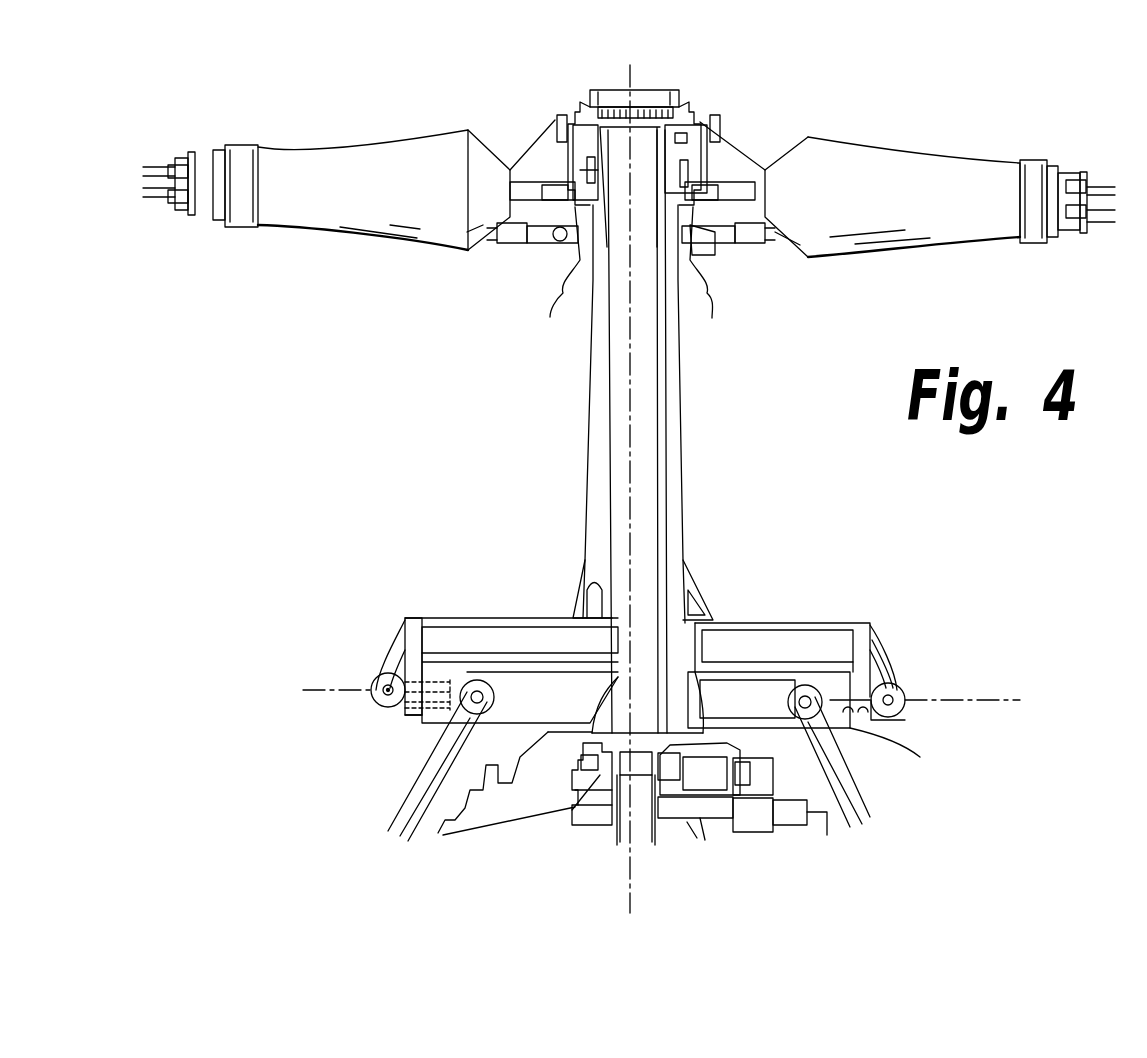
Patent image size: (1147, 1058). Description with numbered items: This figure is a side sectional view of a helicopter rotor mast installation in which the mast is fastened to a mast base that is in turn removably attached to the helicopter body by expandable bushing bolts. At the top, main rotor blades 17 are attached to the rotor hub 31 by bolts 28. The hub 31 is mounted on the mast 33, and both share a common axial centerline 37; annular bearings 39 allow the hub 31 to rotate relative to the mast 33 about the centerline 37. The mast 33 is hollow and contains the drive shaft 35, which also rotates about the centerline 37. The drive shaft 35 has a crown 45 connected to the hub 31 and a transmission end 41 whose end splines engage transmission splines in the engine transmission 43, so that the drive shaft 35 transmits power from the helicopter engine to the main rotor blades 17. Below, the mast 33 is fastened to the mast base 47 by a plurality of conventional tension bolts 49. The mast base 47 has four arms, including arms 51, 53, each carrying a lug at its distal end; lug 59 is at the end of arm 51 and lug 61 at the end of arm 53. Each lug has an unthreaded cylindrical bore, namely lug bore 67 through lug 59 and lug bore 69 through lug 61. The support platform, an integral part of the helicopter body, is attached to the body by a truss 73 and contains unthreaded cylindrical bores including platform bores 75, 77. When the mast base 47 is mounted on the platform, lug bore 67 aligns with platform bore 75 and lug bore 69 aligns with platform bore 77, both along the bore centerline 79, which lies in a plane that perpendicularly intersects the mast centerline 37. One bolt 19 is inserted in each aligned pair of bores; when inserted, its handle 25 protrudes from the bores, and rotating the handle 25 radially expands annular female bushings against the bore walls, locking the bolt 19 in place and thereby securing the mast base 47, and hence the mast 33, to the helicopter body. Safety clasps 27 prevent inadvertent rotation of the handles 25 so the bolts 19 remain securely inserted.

The main rotor blades 17 is at (153, 165).
The bolt 19 is at (374, 676).
The handle 25 is at (388, 660).
The safety clasps 27 is at (398, 630).
The bolts 28 is at (192, 150).
The rotor hub 31 is at (531, 267).
The mast 33 is at (678, 402).
The drive shaft 35 is at (663, 350).
The axial centerline 37 is at (632, 70).
The annular bearings 39 is at (715, 148).
The transmission end 41 is at (632, 773).
The engine transmission 43 is at (757, 836).
The crown 45 is at (612, 128).
The mast base 47 is at (790, 600).
The tension bolts 49 is at (580, 600).
The arm 51 is at (822, 622).
The arm 53 is at (457, 618).
The lug 59 is at (880, 630).
The lug 61 is at (402, 708).
The lug bore 67 is at (890, 718).
The lug bore 69 is at (405, 718).
The truss 73 is at (393, 808).
The platform bore 75 is at (850, 727).
The platform bore 77 is at (420, 727).
The centerline 79 is at (307, 690).